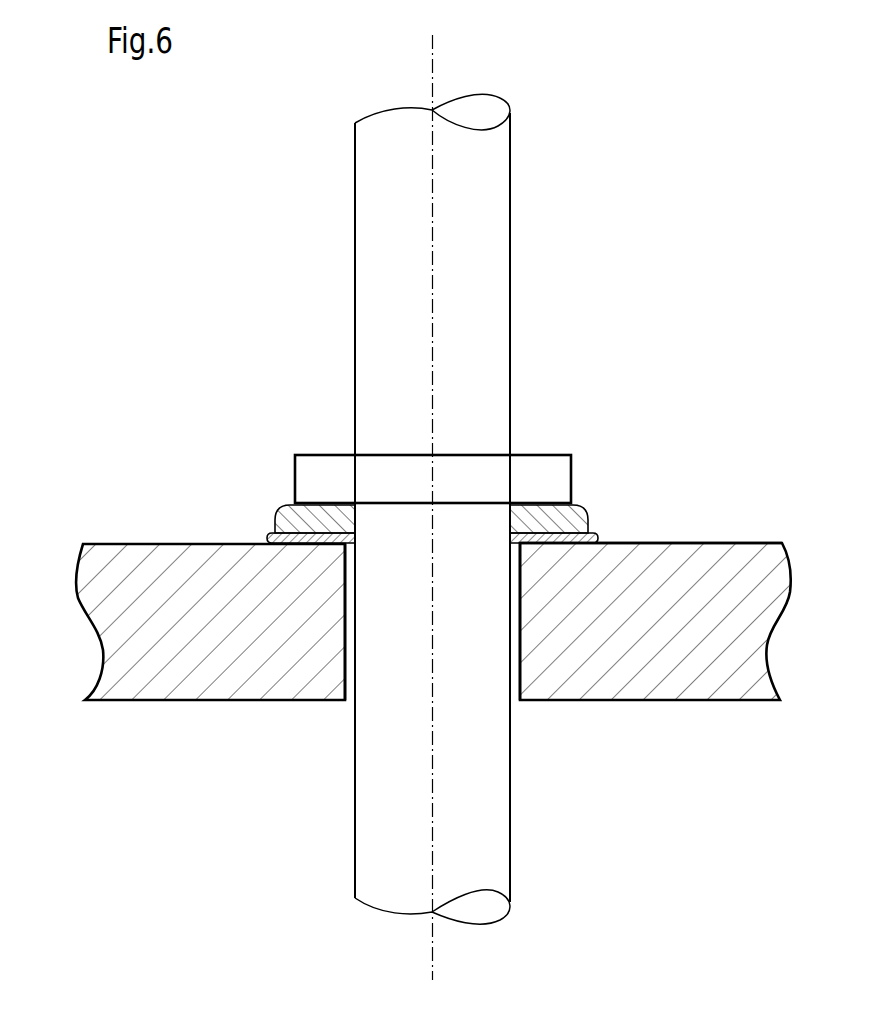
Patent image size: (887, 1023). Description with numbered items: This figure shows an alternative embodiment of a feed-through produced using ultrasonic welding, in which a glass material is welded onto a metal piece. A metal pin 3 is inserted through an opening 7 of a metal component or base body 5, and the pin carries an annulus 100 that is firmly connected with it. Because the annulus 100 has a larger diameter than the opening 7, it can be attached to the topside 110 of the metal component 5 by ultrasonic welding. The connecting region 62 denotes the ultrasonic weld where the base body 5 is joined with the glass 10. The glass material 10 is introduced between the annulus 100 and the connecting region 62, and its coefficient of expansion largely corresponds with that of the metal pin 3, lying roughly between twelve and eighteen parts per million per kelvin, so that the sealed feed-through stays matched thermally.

The metal pin 3 is at (483, 263).
The annulus 100 is at (540, 468).
The glass material 10 is at (578, 513).
The connecting region 62 is at (600, 533).
The topside 110 is at (732, 542).
The metal component 5 is at (770, 606).
The opening 7 is at (521, 700).